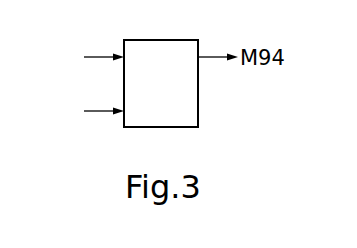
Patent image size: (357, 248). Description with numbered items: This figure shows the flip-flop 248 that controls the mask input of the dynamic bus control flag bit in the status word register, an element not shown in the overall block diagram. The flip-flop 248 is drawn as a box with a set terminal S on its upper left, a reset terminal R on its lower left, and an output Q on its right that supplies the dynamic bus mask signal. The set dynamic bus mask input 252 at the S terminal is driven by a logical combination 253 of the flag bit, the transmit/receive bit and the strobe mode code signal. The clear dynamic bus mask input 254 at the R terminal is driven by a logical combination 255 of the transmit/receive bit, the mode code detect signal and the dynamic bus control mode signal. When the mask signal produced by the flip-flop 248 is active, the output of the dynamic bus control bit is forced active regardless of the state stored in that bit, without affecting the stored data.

The flip-flop 248 is at (183, 93).
The set dynamic bus mask input 252 is at (122, 56).
The logical combination 253 is at (82, 59).
The clear dynamic bus mask input 254 is at (122, 110).
The logical combination 255 is at (82, 111).